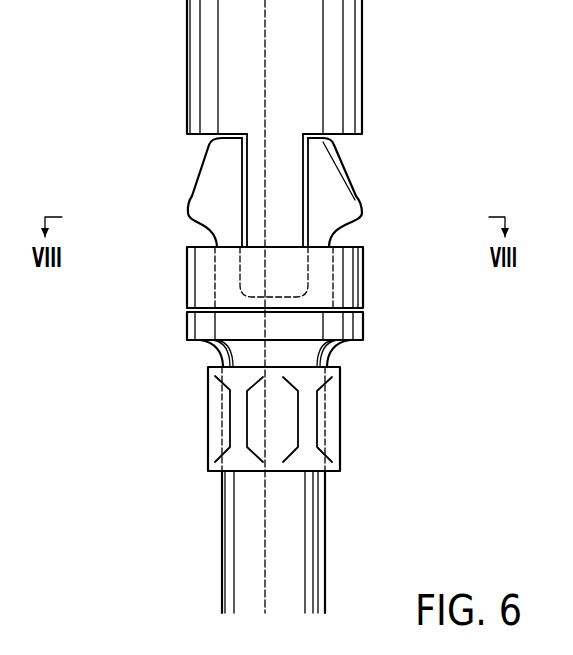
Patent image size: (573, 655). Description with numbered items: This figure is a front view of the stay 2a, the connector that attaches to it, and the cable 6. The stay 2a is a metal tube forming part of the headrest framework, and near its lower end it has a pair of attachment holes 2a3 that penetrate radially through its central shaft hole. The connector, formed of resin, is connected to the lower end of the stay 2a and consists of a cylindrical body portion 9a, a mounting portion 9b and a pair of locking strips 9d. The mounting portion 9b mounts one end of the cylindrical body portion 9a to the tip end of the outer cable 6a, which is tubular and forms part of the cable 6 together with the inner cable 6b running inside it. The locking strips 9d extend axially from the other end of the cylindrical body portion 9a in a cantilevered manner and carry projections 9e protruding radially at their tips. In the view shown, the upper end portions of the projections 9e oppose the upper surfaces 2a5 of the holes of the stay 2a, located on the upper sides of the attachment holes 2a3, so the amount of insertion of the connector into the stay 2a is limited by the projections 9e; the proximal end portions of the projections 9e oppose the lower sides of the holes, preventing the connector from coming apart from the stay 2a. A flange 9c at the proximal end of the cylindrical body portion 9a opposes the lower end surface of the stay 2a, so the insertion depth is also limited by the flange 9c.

The stay 2a is at (168, 70).
The attachment holes 2a3 is at (242, 207).
The upper surfaces of the holes 2a5 is at (208, 140).
The projections 9e is at (200, 202).
The locking strips 9d is at (223, 273).
The flange 9c is at (348, 327).
The cylindrical body portion 9a is at (333, 348).
The mounting portion 9b is at (318, 420).
The cable 6 is at (227, 530).
The outer cable 6a is at (237, 515).
The inner cable 6b is at (268, 538).